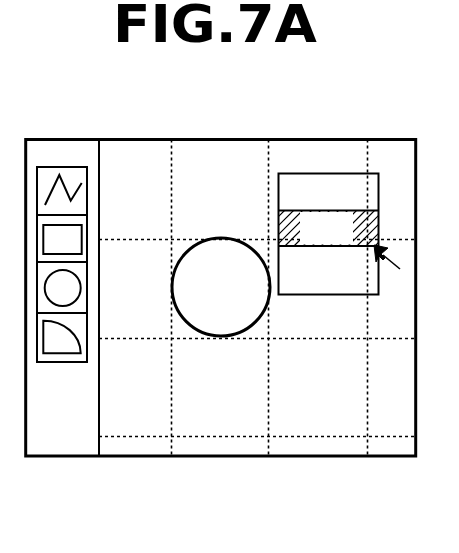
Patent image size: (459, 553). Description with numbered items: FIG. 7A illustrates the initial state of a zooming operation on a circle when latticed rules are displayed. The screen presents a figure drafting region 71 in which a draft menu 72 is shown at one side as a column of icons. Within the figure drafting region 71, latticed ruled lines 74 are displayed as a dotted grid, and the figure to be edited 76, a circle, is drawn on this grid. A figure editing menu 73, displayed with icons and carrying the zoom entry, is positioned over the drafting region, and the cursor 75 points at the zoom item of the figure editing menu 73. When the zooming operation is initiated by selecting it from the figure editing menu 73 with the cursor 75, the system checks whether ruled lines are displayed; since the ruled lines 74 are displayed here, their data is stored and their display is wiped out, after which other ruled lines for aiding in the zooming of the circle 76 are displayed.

The figure drafting region 71 is at (209, 446).
The draft menu 72 is at (65, 166).
The figure editing menu 73 is at (350, 173).
The ruled lines 74 is at (268, 170).
The cursor 75 is at (398, 271).
The figure to be edited 76 is at (270, 302).